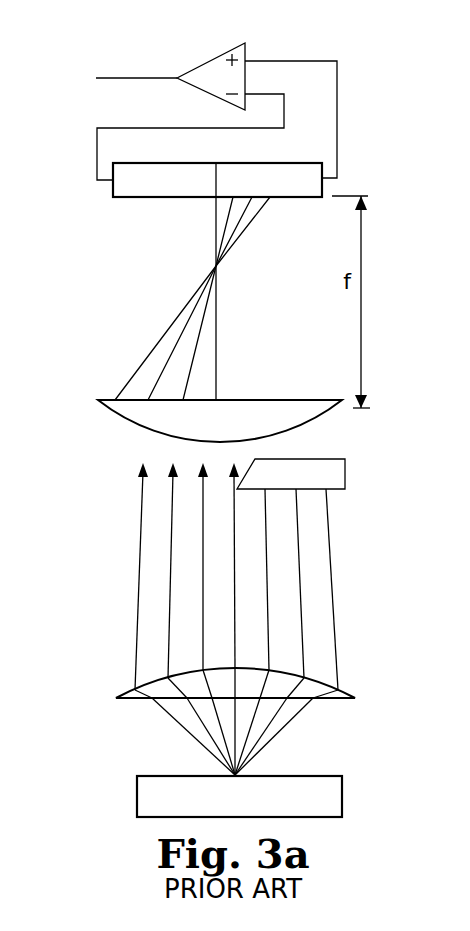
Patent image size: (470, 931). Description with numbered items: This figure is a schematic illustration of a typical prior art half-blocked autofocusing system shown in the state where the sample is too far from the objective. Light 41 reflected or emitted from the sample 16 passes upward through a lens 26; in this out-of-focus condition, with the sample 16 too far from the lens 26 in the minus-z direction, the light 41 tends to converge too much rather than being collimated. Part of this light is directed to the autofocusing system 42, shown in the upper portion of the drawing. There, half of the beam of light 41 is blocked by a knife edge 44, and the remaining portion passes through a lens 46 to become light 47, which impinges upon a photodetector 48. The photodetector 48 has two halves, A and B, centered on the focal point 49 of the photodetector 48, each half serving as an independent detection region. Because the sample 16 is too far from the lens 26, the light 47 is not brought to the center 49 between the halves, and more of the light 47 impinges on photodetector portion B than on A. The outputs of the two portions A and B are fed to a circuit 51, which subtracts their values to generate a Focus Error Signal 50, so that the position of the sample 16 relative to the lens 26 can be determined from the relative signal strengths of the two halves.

The sample 16 is at (137, 798).
The lens 26 is at (132, 693).
The light 41 is at (118, 580).
The autofocusing system 42 is at (360, 520).
The knife edge 44 is at (337, 473).
The lens 46 is at (305, 417).
The light 47 is at (132, 341).
The photodetector 48 is at (113, 196).
The focal point 49 is at (214, 198).
The Focus Error Signal (FES) 50 is at (165, 76).
The circuit 51 is at (208, 63).